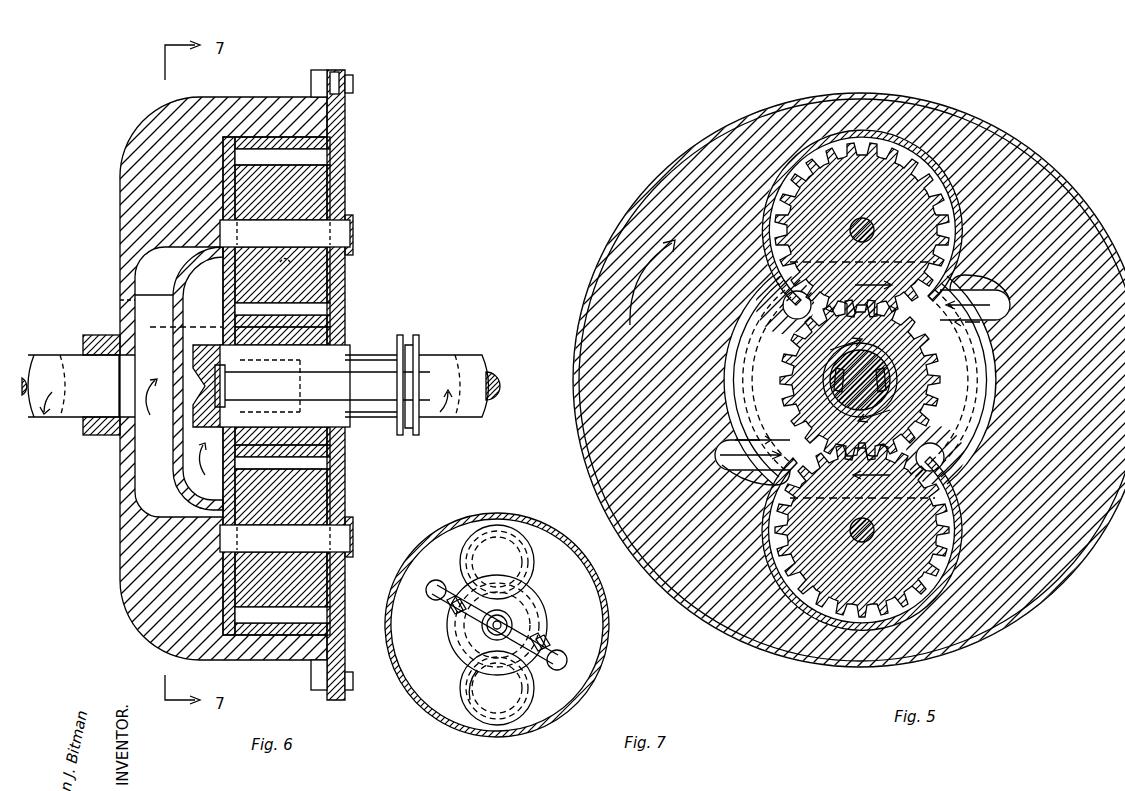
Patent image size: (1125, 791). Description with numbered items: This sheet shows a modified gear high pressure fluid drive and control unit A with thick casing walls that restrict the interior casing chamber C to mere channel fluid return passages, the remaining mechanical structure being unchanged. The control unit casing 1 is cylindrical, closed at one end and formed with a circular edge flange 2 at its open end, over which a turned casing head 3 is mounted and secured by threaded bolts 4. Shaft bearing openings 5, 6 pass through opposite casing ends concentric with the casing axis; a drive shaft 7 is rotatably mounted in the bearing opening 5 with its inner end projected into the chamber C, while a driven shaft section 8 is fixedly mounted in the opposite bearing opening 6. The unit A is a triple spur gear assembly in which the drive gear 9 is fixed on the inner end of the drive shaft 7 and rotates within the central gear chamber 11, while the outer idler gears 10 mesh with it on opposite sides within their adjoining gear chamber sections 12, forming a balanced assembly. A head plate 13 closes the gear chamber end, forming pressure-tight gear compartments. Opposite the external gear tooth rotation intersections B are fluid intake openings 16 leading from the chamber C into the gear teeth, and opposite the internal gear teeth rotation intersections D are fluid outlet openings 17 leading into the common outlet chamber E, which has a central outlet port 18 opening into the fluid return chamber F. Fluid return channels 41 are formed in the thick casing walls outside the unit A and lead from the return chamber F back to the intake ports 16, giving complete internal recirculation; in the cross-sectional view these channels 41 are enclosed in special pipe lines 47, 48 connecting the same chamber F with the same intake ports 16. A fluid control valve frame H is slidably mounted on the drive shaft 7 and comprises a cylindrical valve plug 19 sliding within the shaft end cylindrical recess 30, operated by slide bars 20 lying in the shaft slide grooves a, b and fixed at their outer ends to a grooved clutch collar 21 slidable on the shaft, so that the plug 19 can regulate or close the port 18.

In FIG. 6, the control unit casing 1 is at (250, 663).
In FIG. 7, the control unit casing 1 is at (516, 520).
In FIG. 5, the control unit casing 1 is at (993, 622).
In FIG. 6, the circular edge flange 2 is at (313, 81).
In FIG. 6, the casing head 3 is at (335, 72).
In FIG. 6, the threaded bolts 4 is at (351, 84).
In FIG. 6, the shaft bearing opening 5 is at (352, 427).
In FIG. 6, the shaft bearing opening 6 is at (120, 333).
In FIG. 6, the drive shaft 7 is at (452, 354).
In FIG. 5, the drive shaft 7 is at (900, 373).
In FIG. 6, the driven shaft section 8 is at (57, 357).
In FIG. 6, the drive gear 9 is at (337, 300).
In FIG. 7, the drive gear 9 is at (525, 604).
In FIG. 5, the drive gear 9 is at (793, 368).
In FIG. 6, the outer idler gears 10 is at (327, 203).
In FIG. 7, the outer idler gears 10 is at (528, 561).
In FIG. 5, the outer idler gears 10 is at (805, 190).
In FIG. 6, the central gear chamber 11 is at (342, 319).
In FIG. 5, the central gear chamber 11 is at (800, 383).
In FIG. 6, the gear chamber sections 12 is at (340, 216).
In FIG. 5, the gear chamber sections 12 is at (790, 207).
In FIG. 6, the head plate 13 is at (225, 189).
In FIG. 7, the head plate 13 is at (472, 695).
In FIG. 6, the fluid intake openings 16 is at (328, 285).
In FIG. 7, the fluid intake openings 16 is at (455, 612).
In FIG. 5, the fluid intake openings 16 is at (790, 408).
In FIG. 7, the fluid outlet openings 17 is at (520, 597).
In FIG. 5, the fluid outlet openings 17 is at (786, 342).
In FIG. 6, the central outlet port 18 is at (191, 391).
In FIG. 7, the central outlet port 18 is at (482, 634).
In FIG. 6, the valve plug 19 is at (198, 407).
In FIG. 6, the slide bars 20 is at (404, 345).
In FIG. 5, the slide bars 20 is at (792, 357).
In FIG. 6, the clutch collar 21 is at (419, 346).
In FIG. 6, the shaft end cylindrical recess 30 is at (285, 369).
In FIG. 6, the fluid return channels 41 is at (131, 303).
In FIG. 7, the fluid return channels 41 is at (444, 588).
In FIG. 5, the fluid return channels 41 is at (985, 290).
In FIG. 7, the pipe line 47 is at (563, 655).
In FIG. 7, the pipe line 48 is at (437, 594).
In FIG. 6, the gear fluid drive and control unit A is at (312, 133).
In FIG. 7, the gear fluid drive and control unit A is at (528, 545).
In FIG. 5, the gear fluid drive and control unit A is at (835, 172).
In FIG. 5, the external gear tooth rotation intersections B is at (855, 380).
In FIG. 6, the casing chamber C is at (178, 388).
In FIG. 7, the casing chamber C is at (420, 624).
In FIG. 5, the casing chamber C is at (722, 378).
In FIG. 5, the internal gear teeth rotation intersections D is at (863, 381).
In FIG. 6, the outlet chamber E is at (198, 378).
In FIG. 7, the outlet chamber E is at (545, 617).
In FIG. 5, the outlet chamber E is at (895, 395).
In FIG. 6, the fluid return chamber F is at (155, 272).
In FIG. 5, the fluid return chamber F is at (940, 395).
In FIG. 6, the fluid control valve frame H is at (390, 412).
In FIG. 6, the shaft slide groove a is at (372, 364).
In FIG. 5, the shaft slide groove a is at (836, 397).
In FIG. 5, the shaft slide groove b is at (895, 385).